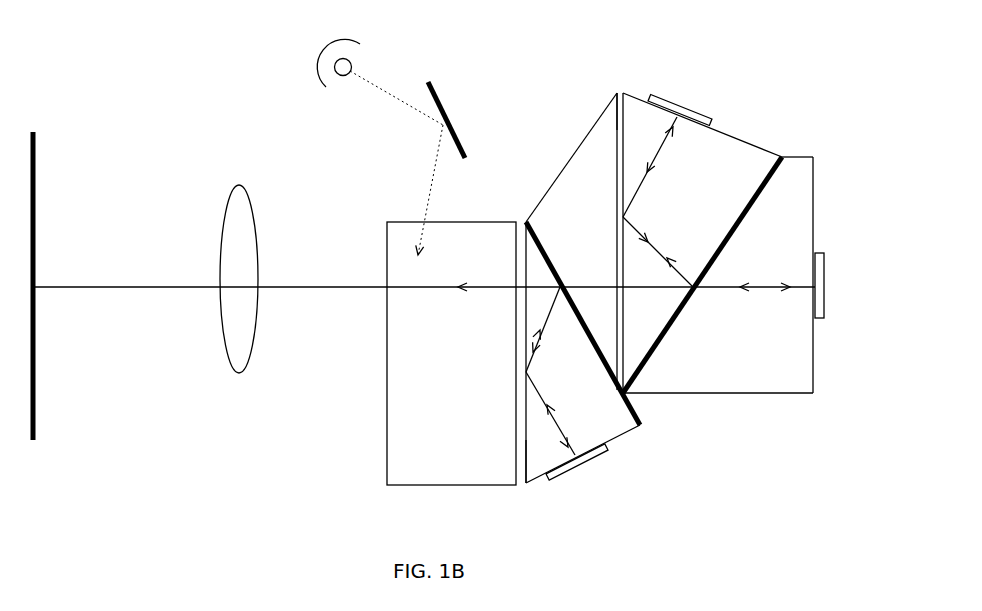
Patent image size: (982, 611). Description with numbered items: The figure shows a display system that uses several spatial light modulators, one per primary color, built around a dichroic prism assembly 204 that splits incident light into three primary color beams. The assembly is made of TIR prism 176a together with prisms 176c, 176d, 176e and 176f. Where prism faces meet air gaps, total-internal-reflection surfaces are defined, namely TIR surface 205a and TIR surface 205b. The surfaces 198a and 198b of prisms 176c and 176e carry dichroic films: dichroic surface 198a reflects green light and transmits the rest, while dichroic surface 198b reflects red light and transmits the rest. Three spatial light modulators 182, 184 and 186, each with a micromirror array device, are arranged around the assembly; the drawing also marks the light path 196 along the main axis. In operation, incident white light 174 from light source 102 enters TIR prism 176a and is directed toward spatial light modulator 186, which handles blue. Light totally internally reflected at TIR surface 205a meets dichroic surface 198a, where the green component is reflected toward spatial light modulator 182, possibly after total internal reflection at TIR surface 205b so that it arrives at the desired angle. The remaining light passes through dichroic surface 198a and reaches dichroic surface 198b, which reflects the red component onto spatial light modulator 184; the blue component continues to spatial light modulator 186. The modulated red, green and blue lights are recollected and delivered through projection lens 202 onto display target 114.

The light source 102 is at (362, 32).
The display target 114 is at (36, 153).
The incident white light 174 is at (397, 130).
The TIR prism 176a is at (387, 387).
The prism 176c is at (627, 434).
The prism 176d is at (608, 214).
The prism 176e is at (756, 180).
The prism 176f is at (789, 386).
The spatial light modulator 182 is at (619, 488).
The spatial light modulator 184 is at (706, 96).
The spatial light modulator 186 is at (872, 300).
The optical axis 196 is at (352, 282).
The dichroic surface 198a is at (645, 418).
The dichroic surface 198b is at (778, 170).
The projection lens 202 is at (241, 186).
The dichroic prism assembly 204 is at (558, 138).
The TIR surface 205a is at (527, 478).
The TIR surface 205b is at (625, 103).